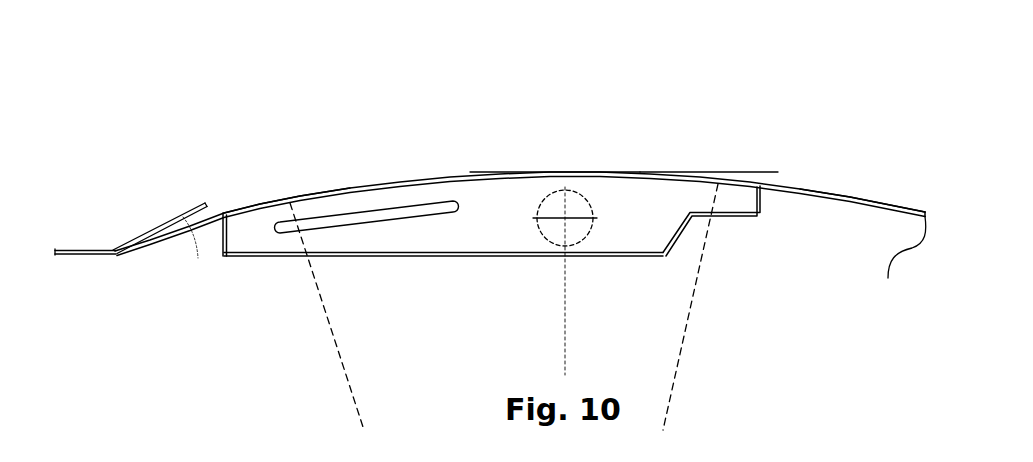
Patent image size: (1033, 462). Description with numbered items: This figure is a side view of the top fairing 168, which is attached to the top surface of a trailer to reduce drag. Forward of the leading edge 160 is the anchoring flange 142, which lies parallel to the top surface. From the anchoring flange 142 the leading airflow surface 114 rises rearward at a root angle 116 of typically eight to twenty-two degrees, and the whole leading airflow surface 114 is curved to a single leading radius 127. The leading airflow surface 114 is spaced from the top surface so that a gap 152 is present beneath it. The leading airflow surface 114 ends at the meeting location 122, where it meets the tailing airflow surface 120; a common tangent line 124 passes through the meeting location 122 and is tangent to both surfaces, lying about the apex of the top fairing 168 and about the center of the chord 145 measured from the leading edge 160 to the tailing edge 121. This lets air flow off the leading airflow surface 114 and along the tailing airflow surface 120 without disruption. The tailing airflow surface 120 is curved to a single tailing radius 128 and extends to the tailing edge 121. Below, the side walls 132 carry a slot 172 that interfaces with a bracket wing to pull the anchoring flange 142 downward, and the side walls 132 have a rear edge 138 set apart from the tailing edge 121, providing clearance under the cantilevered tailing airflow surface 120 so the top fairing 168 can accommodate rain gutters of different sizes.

The top fairing 168 is at (365, 90).
The leading airflow surface 114 is at (290, 198).
The leading edge 160 is at (110, 251).
The root angle 116 is at (186, 239).
The gap 152 is at (211, 258).
The anchoring flange 142 is at (70, 255).
The slot 172 is at (363, 227).
The meeting location 122 is at (555, 172).
The common tangent line 124 is at (747, 170).
The tailing airflow surface 120 is at (802, 187).
The chord 145 is at (837, 193).
The tailing edge 121 is at (898, 263).
The side walls 132 is at (652, 218).
The rear edge 138 is at (678, 233).
The tailing radius 128 is at (678, 356).
The leading radius 127 is at (347, 370).